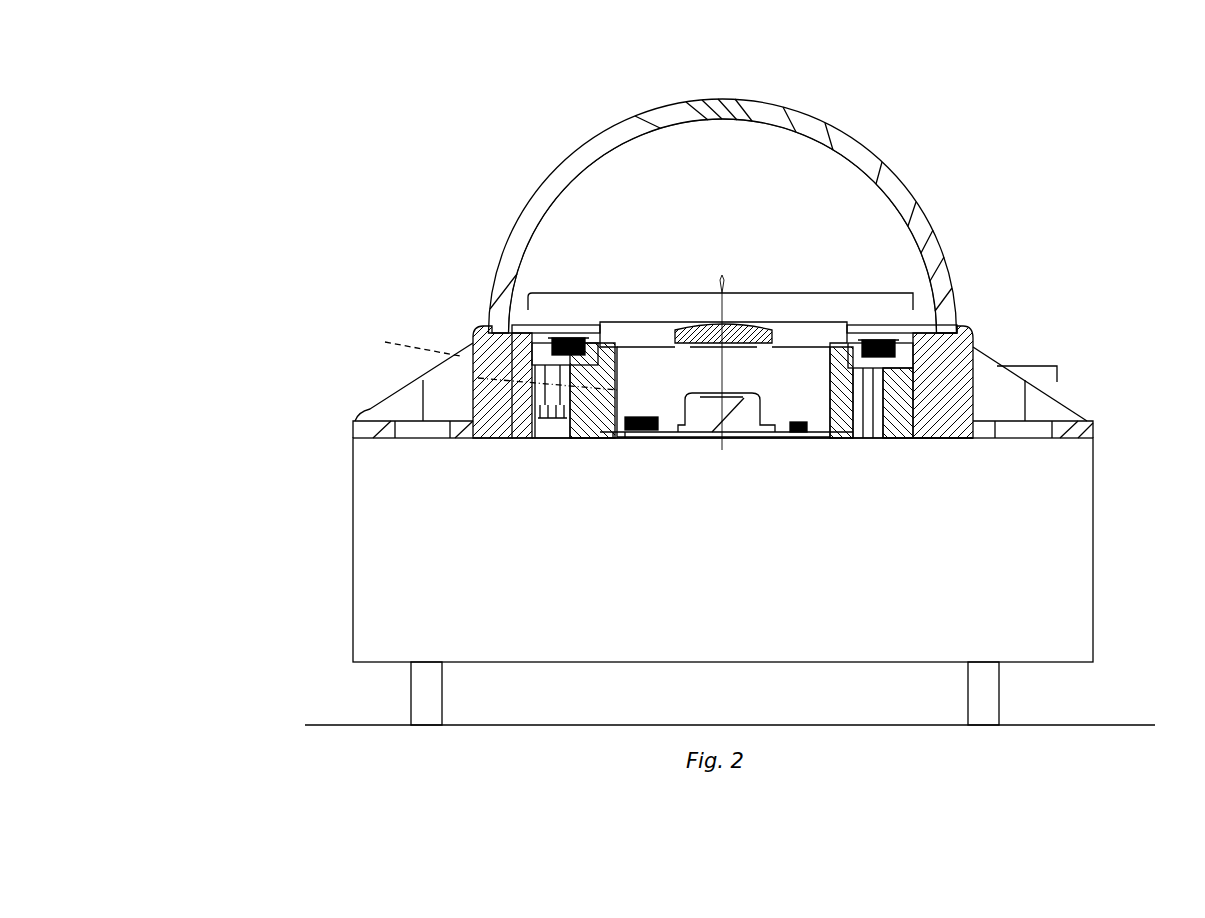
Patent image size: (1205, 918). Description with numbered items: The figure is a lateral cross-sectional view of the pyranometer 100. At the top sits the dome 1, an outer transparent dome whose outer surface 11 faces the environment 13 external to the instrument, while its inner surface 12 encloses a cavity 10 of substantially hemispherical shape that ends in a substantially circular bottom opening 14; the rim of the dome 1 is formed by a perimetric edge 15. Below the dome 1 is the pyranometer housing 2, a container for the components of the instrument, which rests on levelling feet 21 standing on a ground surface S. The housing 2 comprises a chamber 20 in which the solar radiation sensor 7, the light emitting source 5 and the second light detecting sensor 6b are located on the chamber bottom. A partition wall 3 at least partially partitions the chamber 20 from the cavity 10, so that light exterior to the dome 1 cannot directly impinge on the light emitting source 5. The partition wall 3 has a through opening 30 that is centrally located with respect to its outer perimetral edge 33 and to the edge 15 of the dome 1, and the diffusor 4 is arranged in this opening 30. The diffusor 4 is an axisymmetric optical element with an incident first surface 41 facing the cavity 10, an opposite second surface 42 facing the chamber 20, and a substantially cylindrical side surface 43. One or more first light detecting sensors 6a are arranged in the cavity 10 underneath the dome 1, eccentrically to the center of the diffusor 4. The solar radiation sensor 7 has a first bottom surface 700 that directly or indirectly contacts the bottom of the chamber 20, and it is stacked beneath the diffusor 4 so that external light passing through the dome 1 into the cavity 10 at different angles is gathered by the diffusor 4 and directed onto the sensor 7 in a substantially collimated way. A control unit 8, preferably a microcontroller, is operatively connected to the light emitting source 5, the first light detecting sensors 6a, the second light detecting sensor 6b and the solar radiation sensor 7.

The dome 1 is at (968, 160).
The pyranometer housing 2 is at (322, 500).
The partition wall 3 is at (825, 330).
The diffusor 4 is at (695, 322).
The light emitting source 5 is at (801, 421).
The first light detecting sensor 6a is at (566, 331).
The second light detecting sensor 6b is at (637, 436).
The solar radiation sensor 7 is at (753, 438).
The control unit 8 is at (736, 588).
The cavity 10 is at (818, 259).
The outer surface 11 is at (862, 122).
The inner surface 12 is at (585, 187).
The environment 13 is at (1176, 182).
The bottom opening 14 is at (701, 282).
The edge 15 is at (502, 330).
The chamber 20 is at (483, 359).
The levelling foot 21 is at (988, 686).
The through opening 30 is at (770, 310).
The outer perimetral edge 33 is at (927, 325).
The incident first surface 41 is at (742, 312).
The second surface 42 is at (689, 348).
The side surface 43 is at (777, 343).
The pyranometer 100 is at (415, 158).
The first bottom surface 700 is at (698, 446).
The ground surface S is at (322, 708).